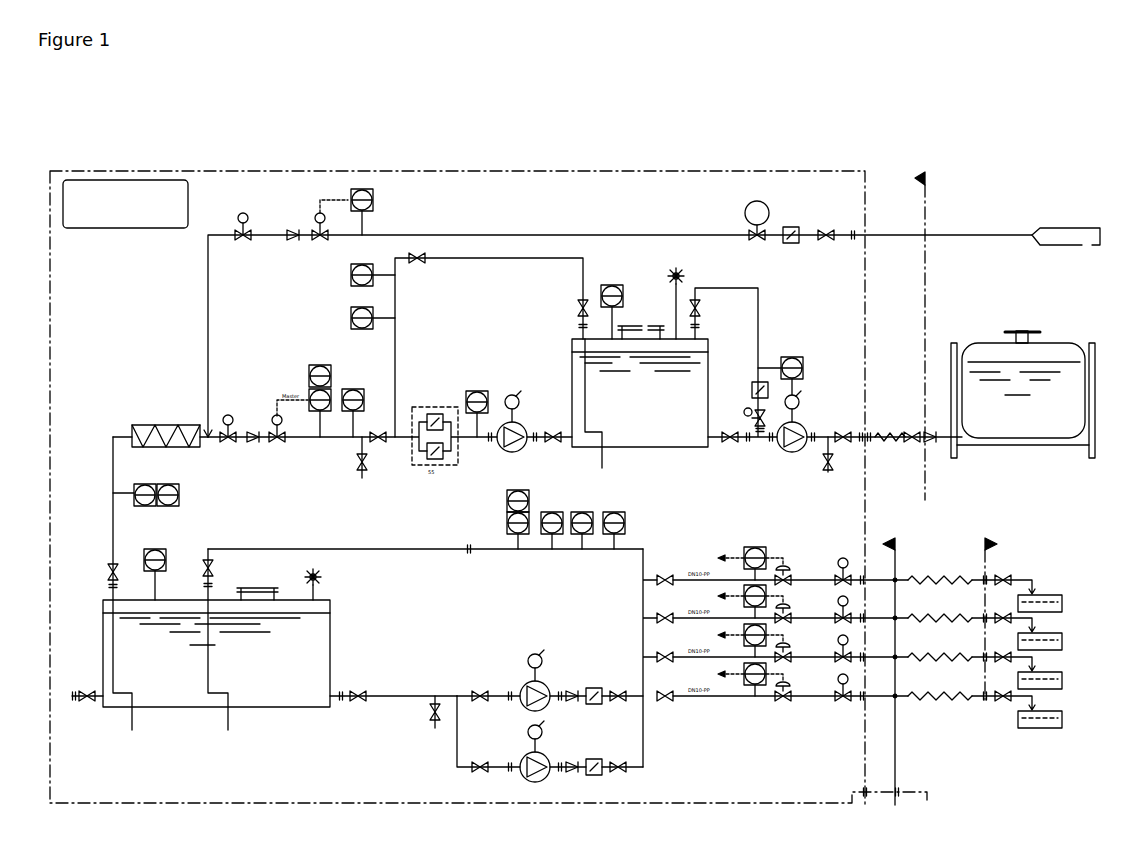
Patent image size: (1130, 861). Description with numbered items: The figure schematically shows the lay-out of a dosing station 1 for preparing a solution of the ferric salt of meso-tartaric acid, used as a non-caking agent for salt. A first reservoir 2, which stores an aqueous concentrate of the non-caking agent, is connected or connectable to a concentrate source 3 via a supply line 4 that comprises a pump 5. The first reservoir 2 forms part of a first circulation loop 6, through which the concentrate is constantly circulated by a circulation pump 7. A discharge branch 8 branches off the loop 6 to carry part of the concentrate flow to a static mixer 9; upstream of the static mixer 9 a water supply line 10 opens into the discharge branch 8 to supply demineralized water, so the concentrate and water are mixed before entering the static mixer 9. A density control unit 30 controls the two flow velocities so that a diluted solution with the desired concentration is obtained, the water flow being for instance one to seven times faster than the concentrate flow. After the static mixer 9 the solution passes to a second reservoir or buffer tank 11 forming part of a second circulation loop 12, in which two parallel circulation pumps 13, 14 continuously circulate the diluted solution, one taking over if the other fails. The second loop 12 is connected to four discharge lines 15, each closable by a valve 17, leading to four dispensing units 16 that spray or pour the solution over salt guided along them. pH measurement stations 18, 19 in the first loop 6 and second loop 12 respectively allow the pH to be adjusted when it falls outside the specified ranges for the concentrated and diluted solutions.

The dosing station 1 is at (868, 154).
The first reservoir 2 is at (702, 368).
The concentrate source 3 is at (1045, 348).
The supply line 4 is at (889, 435).
The pump 5 is at (800, 425).
The first circulation loop 6 is at (400, 336).
The circulation pump 7 is at (523, 422).
The discharge branch 8 is at (394, 446).
The static mixer 9 is at (155, 424).
The water supply line 10 is at (213, 367).
The buffer tank 11 is at (322, 632).
The second circulation loop 12 is at (452, 553).
The circulation pump 13 is at (548, 689).
The circulation pump 14 is at (552, 762).
The discharge lines 15 is at (710, 602).
The dispensing units 16 is at (1080, 722).
The valve 17 is at (662, 696).
The pH measurement station 18 is at (350, 318).
The pH measurement station 19 is at (548, 555).
The density control unit 30 is at (530, 496).